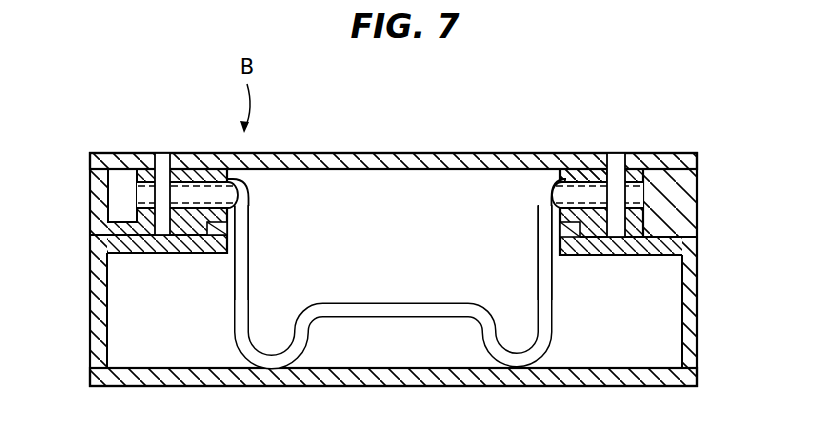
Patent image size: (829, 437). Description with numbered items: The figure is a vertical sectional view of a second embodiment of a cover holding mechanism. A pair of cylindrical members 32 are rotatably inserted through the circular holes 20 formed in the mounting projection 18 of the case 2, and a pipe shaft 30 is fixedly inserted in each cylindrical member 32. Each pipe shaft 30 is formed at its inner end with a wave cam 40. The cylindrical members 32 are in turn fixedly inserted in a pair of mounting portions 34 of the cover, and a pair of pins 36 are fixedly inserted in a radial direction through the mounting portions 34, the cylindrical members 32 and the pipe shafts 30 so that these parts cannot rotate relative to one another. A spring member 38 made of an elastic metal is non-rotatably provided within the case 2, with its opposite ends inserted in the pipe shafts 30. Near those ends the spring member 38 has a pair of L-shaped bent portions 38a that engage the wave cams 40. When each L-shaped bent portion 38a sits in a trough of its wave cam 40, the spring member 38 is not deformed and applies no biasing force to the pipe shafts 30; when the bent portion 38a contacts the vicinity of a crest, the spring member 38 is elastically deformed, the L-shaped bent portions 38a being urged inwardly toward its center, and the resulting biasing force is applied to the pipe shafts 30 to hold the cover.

The case 2 is at (360, 388).
The mounting projection 18 is at (398, 152).
The circular hole 20 is at (215, 230).
The pipe shaft 30 is at (210, 195).
The cylindrical member 32 is at (586, 172).
The mounting portion 34 is at (121, 153).
The pin 36 is at (163, 153).
The spring member 38 is at (390, 304).
The L-shaped bent portion 38a is at (249, 221).
The wave cam 40 is at (225, 180).